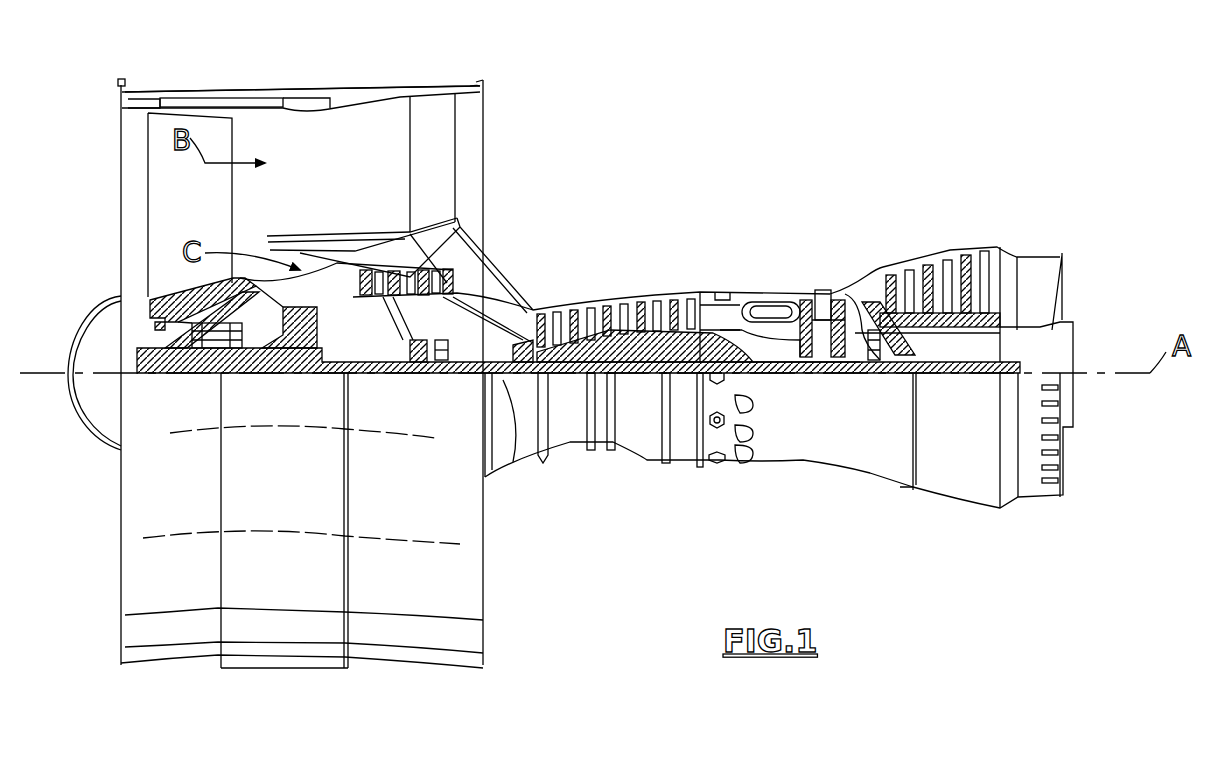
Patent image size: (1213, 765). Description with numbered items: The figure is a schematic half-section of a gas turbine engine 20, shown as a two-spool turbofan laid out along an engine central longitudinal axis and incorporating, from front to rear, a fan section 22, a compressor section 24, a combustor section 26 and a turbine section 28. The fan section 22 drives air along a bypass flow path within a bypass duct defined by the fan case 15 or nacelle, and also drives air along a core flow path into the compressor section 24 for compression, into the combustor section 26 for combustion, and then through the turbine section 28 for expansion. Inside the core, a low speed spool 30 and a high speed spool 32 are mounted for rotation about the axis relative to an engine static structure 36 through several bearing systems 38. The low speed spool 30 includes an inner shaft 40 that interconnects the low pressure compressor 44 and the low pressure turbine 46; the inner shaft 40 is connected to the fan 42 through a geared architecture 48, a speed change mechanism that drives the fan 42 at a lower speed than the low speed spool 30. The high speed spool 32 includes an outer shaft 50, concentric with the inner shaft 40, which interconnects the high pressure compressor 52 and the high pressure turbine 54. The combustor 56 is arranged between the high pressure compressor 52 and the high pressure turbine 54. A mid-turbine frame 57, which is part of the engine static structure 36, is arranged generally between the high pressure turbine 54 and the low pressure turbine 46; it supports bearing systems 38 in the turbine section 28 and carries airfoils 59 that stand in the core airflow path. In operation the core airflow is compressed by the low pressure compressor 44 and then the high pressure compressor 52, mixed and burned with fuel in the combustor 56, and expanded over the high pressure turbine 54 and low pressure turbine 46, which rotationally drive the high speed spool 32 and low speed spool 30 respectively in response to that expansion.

The fan case 15 is at (302, 92).
The gas turbine engine 20 is at (760, 140).
The fan section 22 is at (232, 82).
The compressor section 24 is at (535, 283).
The combustor section 26 is at (757, 268).
The turbine section 28 is at (905, 233).
The low speed spool 30 is at (641, 378).
The high speed spool 32 is at (680, 340).
The engine static structure 36 is at (681, 467).
The bearing systems 38 is at (440, 360).
The inner shaft 40 is at (503, 385).
The fan 42 is at (190, 205).
The low pressure compressor 44 is at (413, 277).
The low pressure turbine 46 is at (955, 258).
The geared architecture 48 is at (310, 357).
The outer shaft 50 is at (760, 353).
The high pressure compressor 52 is at (617, 347).
The high pressure turbine 54 is at (823, 290).
The combustor 56 is at (757, 317).
The mid-turbine frame 57 is at (867, 280).
The airfoils 59 is at (883, 333).